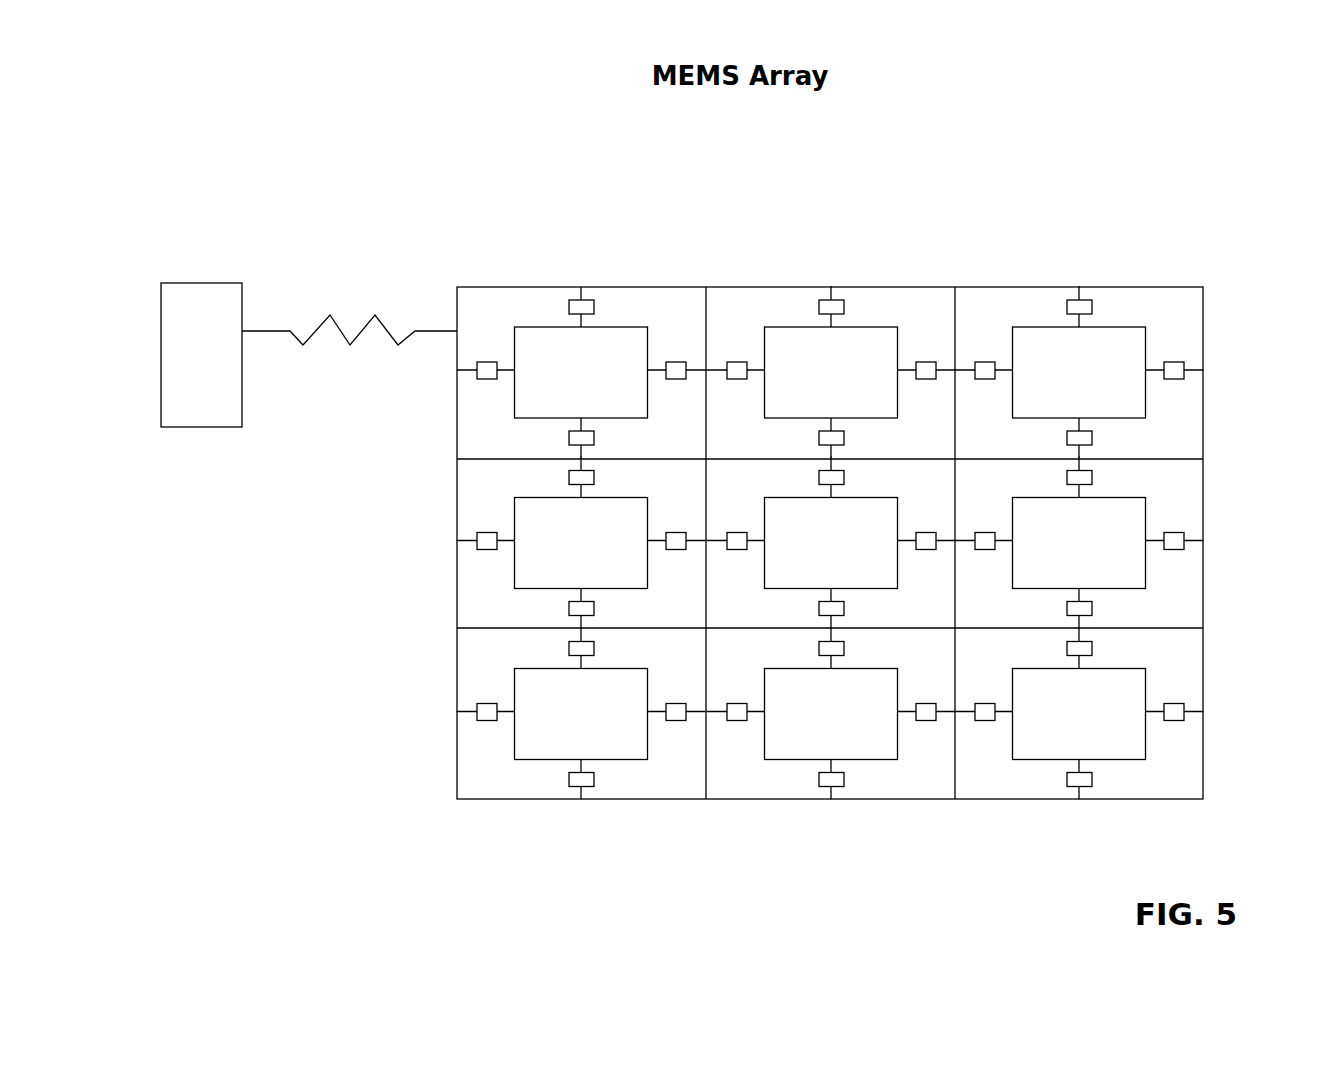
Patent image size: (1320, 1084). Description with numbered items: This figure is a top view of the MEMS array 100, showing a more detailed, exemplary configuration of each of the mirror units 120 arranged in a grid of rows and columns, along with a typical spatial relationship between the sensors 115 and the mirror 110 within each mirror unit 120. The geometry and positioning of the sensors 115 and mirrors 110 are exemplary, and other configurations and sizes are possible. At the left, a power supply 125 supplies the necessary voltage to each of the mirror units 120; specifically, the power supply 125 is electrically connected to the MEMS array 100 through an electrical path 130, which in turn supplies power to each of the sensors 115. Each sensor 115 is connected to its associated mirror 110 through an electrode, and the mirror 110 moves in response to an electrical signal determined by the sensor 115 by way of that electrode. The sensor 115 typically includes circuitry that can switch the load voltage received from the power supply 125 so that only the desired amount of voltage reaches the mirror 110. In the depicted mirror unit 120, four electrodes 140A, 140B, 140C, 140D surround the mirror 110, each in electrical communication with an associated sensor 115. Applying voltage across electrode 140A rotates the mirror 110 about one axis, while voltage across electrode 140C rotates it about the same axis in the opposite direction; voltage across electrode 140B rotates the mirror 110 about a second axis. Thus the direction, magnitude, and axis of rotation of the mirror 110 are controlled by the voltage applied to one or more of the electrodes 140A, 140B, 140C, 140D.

The MEMS array 100 is at (350, 176).
The mirror 110 is at (537, 366).
The sensor 115 is at (585, 302).
The mirror unit 120 is at (955, 268).
The power supply 125 is at (200, 427).
The electrical path 130 is at (455, 310).
The electrode 140A is at (577, 300).
The electrode 140B is at (658, 366).
The electrode 140C is at (577, 421).
The electrode 140D is at (502, 367).